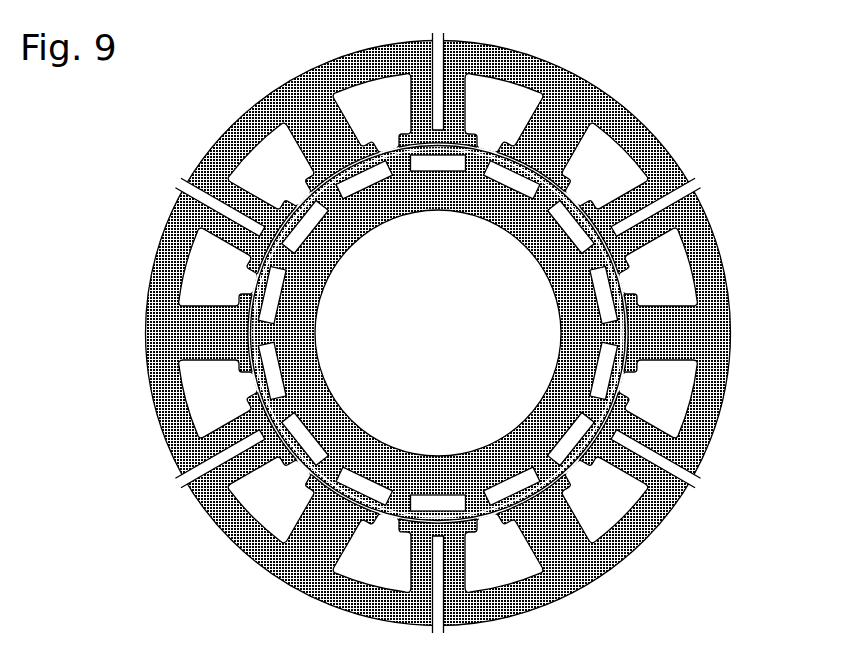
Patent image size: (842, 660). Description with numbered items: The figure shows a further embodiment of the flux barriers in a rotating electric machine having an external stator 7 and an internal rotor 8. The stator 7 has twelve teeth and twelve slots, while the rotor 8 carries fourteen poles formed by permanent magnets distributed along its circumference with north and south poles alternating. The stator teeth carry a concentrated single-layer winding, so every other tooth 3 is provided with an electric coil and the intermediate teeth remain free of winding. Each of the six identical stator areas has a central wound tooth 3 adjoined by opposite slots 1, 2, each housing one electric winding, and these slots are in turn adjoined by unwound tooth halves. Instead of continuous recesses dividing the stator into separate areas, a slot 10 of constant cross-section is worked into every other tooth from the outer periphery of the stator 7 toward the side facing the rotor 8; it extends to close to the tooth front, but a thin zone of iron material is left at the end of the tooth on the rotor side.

The slot 1 is at (667, 270).
The slot 2 is at (655, 388).
The tooth 3 is at (680, 330).
The stator 7 is at (168, 270).
The rotor 8 is at (307, 338).
The slot 10 is at (667, 200).